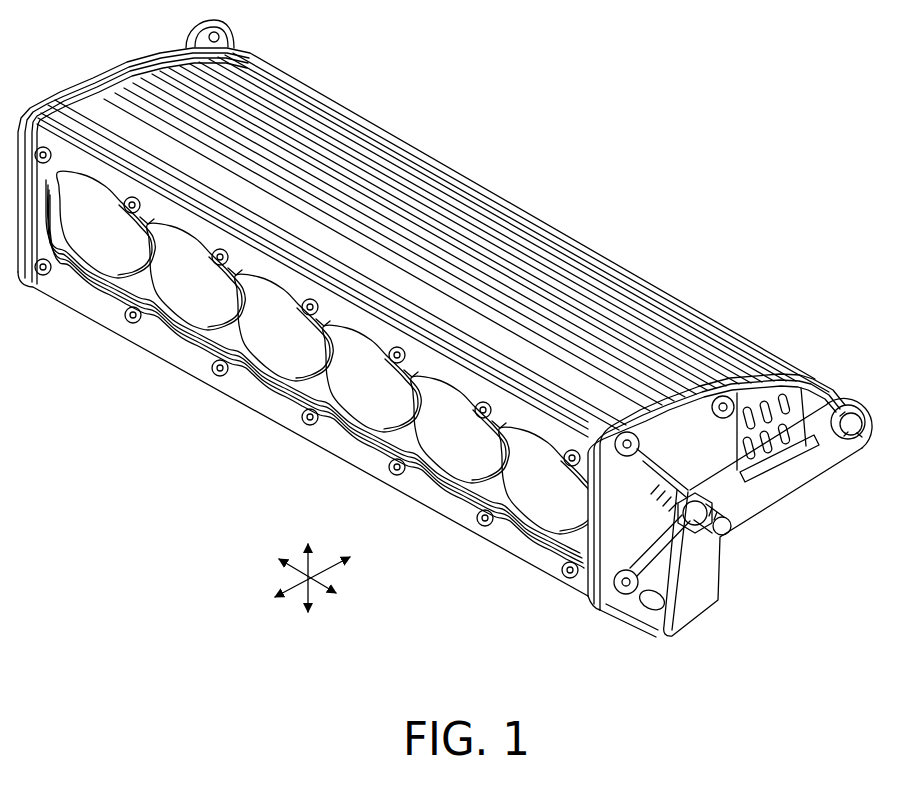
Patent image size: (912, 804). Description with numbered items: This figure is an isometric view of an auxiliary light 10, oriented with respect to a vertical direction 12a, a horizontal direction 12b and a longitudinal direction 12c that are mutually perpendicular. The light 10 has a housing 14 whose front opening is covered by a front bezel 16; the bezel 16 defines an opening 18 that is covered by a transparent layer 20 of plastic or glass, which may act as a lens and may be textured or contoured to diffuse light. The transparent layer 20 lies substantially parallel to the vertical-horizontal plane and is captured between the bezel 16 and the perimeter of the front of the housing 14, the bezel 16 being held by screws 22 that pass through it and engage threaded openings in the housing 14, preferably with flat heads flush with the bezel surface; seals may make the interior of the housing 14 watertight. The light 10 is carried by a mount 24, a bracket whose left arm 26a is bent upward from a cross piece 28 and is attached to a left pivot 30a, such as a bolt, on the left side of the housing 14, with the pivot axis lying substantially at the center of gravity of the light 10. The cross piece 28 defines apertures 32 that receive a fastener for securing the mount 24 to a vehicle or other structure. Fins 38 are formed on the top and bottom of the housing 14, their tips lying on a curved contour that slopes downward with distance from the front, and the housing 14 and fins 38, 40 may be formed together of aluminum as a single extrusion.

The auxiliary light 10 is at (606, 138).
The housing 14 is at (115, 117).
The front bezel 16 is at (155, 340).
The opening 18 is at (90, 283).
The transparent layer 20 is at (122, 258).
The screws 22 is at (213, 378).
The mount 24 is at (758, 585).
The left arm 26a is at (697, 597).
The cross piece 28 is at (633, 610).
The left pivot 30a is at (728, 528).
The apertures 32 is at (653, 607).
The fins 38 is at (473, 187).
The fins 40 is at (293, 163).
The vertical direction 12a is at (302, 594).
The horizontal direction 12b is at (322, 592).
The longitudinal direction 12c is at (318, 566).